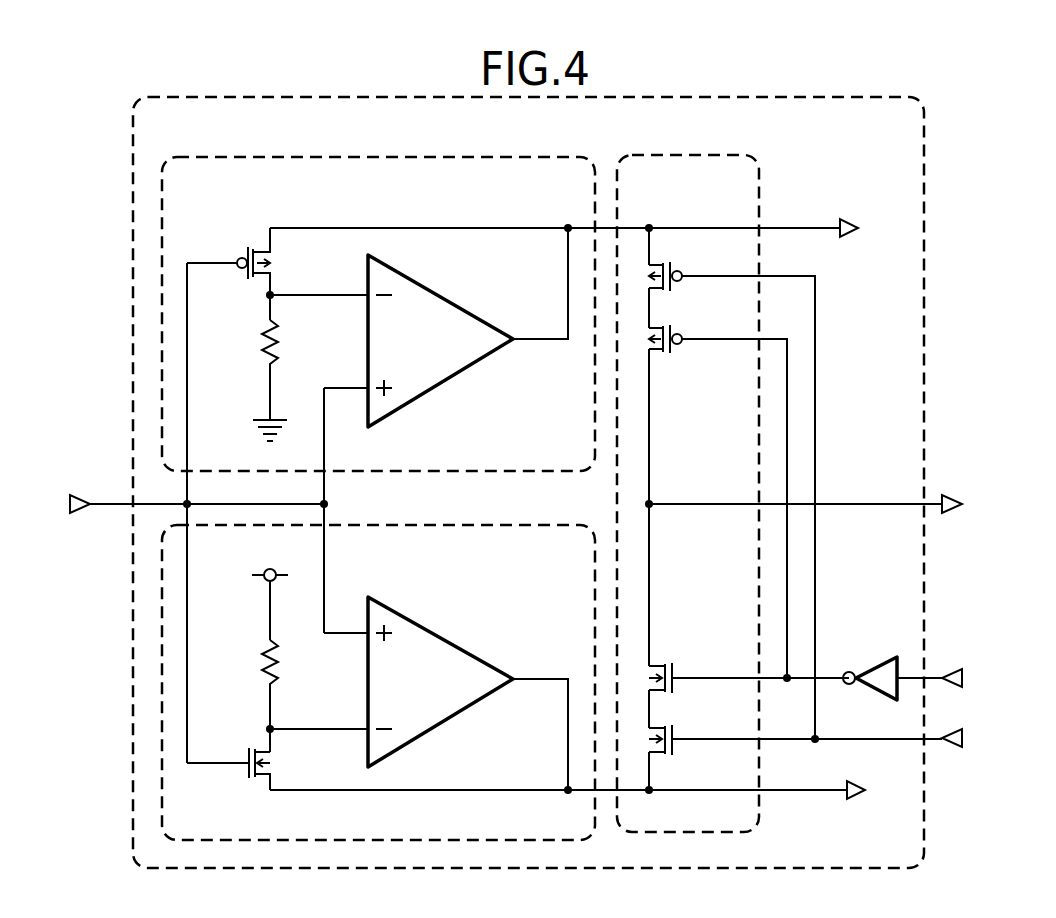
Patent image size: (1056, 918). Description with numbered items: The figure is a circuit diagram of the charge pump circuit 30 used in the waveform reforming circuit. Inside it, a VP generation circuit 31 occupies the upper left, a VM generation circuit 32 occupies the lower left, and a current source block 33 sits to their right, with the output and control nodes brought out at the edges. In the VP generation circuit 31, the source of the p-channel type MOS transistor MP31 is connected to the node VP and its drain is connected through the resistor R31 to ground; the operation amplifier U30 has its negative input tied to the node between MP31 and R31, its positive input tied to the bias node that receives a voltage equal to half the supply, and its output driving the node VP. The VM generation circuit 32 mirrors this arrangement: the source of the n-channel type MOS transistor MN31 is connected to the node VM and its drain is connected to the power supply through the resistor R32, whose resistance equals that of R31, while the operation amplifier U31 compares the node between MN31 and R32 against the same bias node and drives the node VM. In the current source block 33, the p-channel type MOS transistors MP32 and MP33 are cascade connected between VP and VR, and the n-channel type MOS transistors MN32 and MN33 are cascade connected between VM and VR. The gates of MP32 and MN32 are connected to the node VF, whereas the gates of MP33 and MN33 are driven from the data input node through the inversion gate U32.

The charge pump circuit 30 is at (925, 140).
The VP generation circuit 31 is at (473, 157).
The VM generation circuit 32 is at (455, 526).
The current source 33 is at (762, 178).
The p-channel type MOS transistor MP31 is at (248, 247).
The resistor R31 is at (255, 345).
The operation amplifier U30 is at (473, 312).
The resistor R32 is at (260, 662).
The n-channel type MOS transistor MN31 is at (242, 773).
The operation amplifier U31 is at (472, 653).
The p-channel type MOS transistor MP32 is at (677, 288).
The p-channel type MOS transistor MP33 is at (677, 350).
The n-channel type MOS transistor MN33 is at (702, 660).
The n-channel type MOS transistor MN32 is at (702, 718).
The inversion gate U32 is at (878, 660).